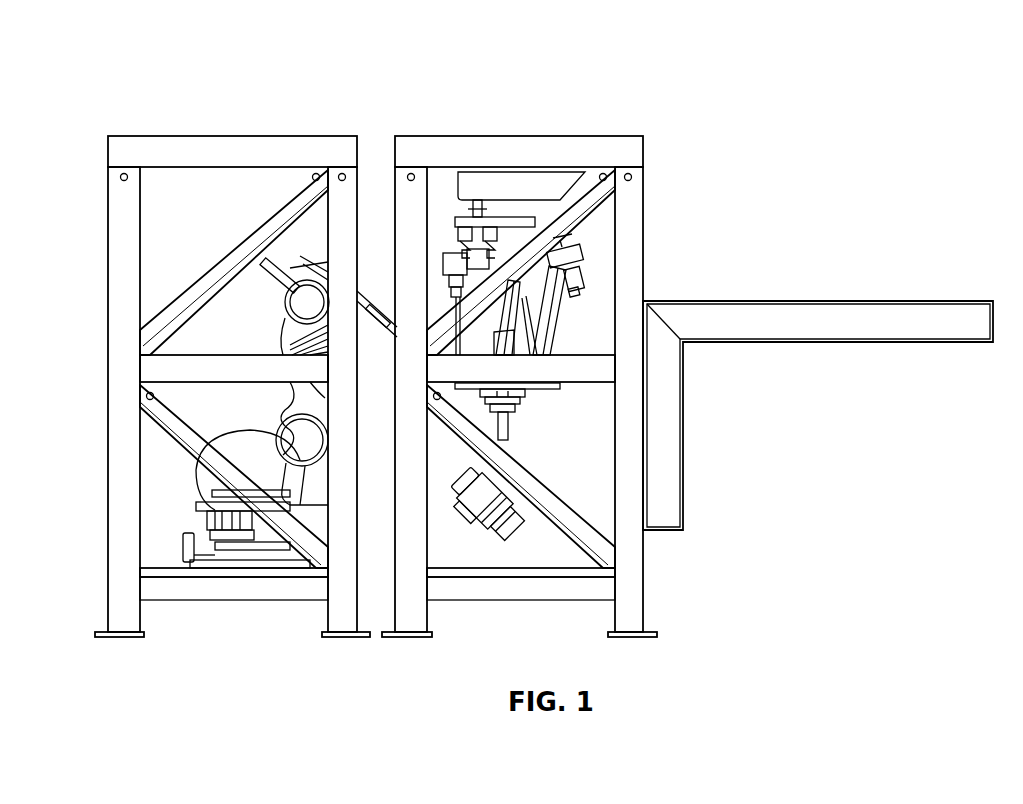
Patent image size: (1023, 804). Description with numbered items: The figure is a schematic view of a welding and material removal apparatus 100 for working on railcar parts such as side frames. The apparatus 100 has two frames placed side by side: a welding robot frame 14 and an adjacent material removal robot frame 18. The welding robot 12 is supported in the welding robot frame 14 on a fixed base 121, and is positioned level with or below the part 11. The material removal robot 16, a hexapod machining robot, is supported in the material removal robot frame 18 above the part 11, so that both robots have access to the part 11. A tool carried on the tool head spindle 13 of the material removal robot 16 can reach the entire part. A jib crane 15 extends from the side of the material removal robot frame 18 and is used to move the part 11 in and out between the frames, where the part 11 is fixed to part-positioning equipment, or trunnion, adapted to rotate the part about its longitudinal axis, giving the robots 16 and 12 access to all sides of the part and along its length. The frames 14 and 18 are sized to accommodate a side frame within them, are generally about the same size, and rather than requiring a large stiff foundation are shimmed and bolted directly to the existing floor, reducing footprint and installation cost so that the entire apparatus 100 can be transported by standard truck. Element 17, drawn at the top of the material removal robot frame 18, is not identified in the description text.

The apparatus 100 is at (100, 77).
The part 11 is at (475, 505).
The welding robot 12 is at (284, 318).
The tool head spindle 13 is at (525, 397).
The welding robot frame 14 is at (118, 343).
The jib crane 15 is at (818, 415).
The material removal robot 16 is at (560, 313).
The control box 17 is at (515, 180).
The material removal robot frame 18 is at (635, 603).
The fixed base 121 is at (185, 578).